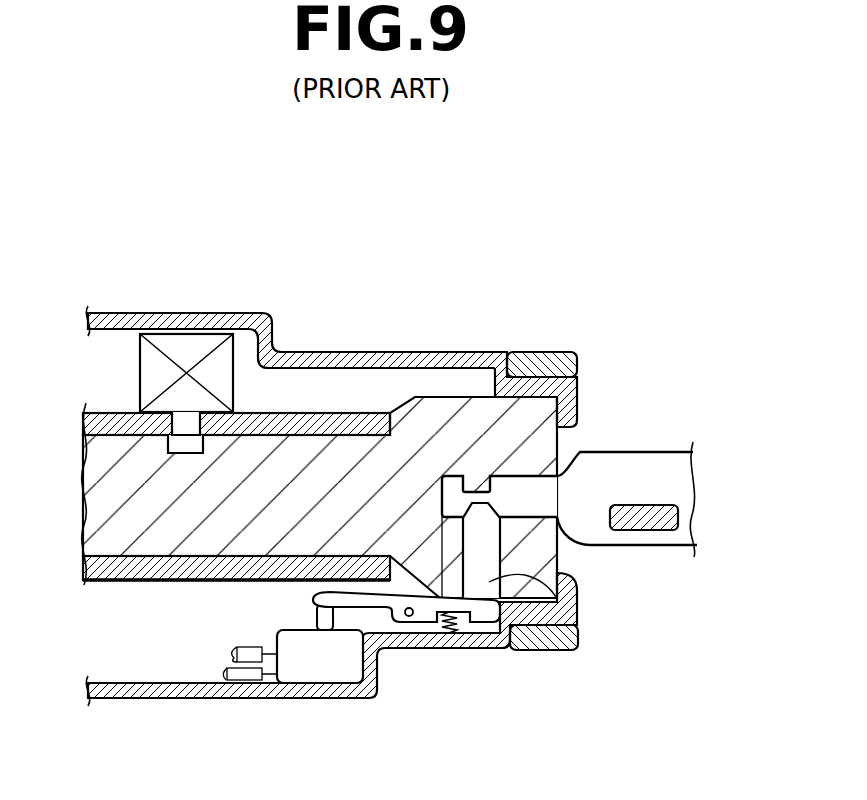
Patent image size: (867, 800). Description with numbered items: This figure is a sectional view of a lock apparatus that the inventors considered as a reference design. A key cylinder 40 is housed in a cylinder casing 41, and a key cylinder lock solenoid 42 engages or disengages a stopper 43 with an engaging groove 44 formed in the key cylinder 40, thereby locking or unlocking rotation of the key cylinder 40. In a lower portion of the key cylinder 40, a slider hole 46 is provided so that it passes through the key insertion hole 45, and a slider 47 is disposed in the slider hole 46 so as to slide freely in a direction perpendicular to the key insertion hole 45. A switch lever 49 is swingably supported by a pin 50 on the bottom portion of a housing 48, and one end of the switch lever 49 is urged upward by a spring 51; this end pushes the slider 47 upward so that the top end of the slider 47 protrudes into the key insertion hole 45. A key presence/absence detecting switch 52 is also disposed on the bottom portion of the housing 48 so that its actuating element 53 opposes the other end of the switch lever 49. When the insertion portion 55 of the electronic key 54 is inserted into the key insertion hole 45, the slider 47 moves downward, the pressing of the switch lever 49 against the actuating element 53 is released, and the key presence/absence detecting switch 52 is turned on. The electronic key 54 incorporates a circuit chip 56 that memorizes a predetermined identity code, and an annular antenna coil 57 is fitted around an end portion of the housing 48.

The key cylinder 40 is at (410, 408).
The cylinder casing 41 is at (140, 581).
The key cylinder lock solenoid 42 is at (138, 366).
The stopper 43 is at (186, 420).
The engaging groove 44 is at (186, 450).
The key insertion hole 45 is at (540, 498).
The slider hole 46 is at (491, 553).
The slider 47 is at (580, 611).
The housing 48 is at (157, 699).
The switch lever 49 is at (375, 607).
The pin 50 is at (410, 617).
The spring 51 is at (470, 633).
The key presence/absence detecting switch 52 is at (303, 668).
The actuating element 53 is at (318, 613).
The electronic key 54 is at (665, 450).
The insertion portion 55 is at (457, 497).
The circuit chip 56 is at (665, 498).
The annular antenna coil 57 is at (548, 353).